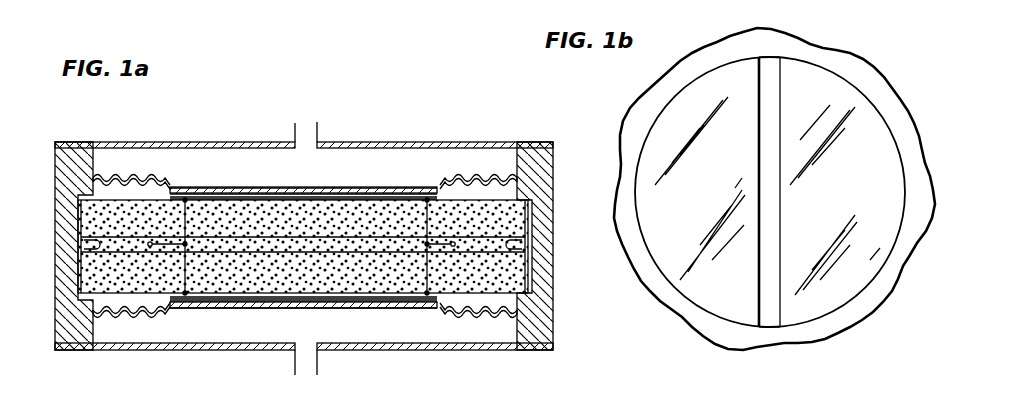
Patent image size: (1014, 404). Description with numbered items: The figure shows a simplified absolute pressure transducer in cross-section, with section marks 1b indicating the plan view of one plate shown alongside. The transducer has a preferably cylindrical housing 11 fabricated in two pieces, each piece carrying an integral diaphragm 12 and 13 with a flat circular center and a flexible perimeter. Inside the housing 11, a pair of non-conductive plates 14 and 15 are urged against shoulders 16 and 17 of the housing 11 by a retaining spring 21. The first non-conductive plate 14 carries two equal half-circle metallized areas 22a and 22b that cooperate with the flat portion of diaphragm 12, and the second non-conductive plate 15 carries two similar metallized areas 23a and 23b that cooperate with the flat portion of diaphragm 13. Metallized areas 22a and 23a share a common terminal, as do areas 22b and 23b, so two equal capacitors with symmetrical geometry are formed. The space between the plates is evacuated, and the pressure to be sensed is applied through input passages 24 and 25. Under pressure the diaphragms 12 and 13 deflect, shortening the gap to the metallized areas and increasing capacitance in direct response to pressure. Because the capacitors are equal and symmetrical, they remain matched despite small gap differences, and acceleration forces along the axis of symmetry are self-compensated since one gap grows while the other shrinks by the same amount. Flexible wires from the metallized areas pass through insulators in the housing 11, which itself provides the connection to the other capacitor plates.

In FIG. 1a, the housing 11 is at (62, 158).
In FIG. 1a, the diaphragm 12 is at (200, 187).
In FIG. 1a, the diaphragm 13 is at (247, 310).
In FIG. 1a, the first non-conductive plate 14 is at (80, 217).
In FIG. 1a, the second non-conductive plate 15 is at (82, 262).
In FIG. 1a, the shoulder 16 is at (80, 189).
In FIG. 1a, the shoulder 17 is at (90, 298).
In FIG. 1a, the retaining spring 21 is at (92, 244).
In FIG. 1a, the metallized area 22a is at (222, 190).
In FIG. 1b, the metallized area 22a is at (720, 178).
In FIG. 1a, the metallized area 22b is at (380, 190).
In FIG. 1b, the metallized area 22b is at (860, 188).
In FIG. 1a, the metallized area 23a is at (197, 302).
In FIG. 1a, the metallized area 23b is at (383, 308).
In FIG. 1a, the input passage 24 is at (293, 128).
In FIG. 1a, the input passage 25 is at (318, 360).
In FIG. 1a, the section line 1b is at (155, 175).